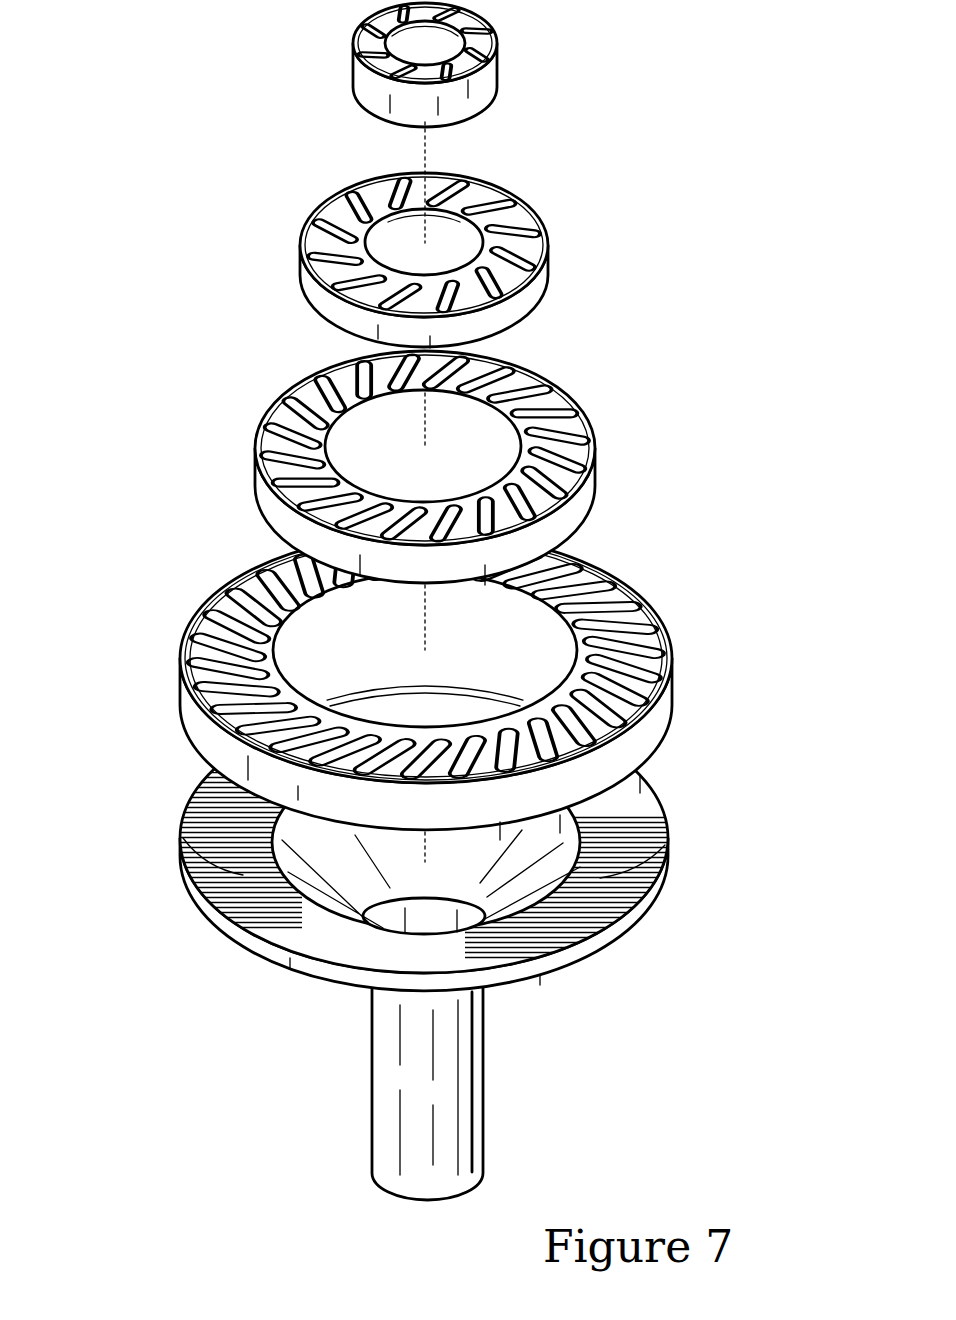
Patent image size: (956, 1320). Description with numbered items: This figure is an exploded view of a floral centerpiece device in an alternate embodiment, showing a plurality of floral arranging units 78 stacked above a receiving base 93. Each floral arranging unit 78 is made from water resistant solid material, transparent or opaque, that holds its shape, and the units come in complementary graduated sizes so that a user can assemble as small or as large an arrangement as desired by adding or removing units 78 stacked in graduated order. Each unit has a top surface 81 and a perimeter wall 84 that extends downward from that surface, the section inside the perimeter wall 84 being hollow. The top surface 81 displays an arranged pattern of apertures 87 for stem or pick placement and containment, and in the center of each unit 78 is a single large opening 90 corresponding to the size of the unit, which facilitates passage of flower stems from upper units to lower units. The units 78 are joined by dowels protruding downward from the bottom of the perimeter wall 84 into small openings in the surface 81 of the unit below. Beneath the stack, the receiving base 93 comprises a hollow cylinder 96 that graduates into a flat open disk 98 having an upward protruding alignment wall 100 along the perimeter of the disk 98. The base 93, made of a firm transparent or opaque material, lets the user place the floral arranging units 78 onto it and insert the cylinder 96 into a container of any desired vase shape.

The floral arranging unit 78 is at (418, 421).
The top surface 81 is at (186, 648).
The perimeter wall 84 is at (205, 735).
The apertures 87 is at (245, 578).
The large opening 90 is at (325, 636).
The receiving base 93 is at (438, 884).
The hollow cylinder 96 is at (485, 1088).
The flat open disk 98 is at (183, 835).
The alignment wall 100 is at (330, 967).